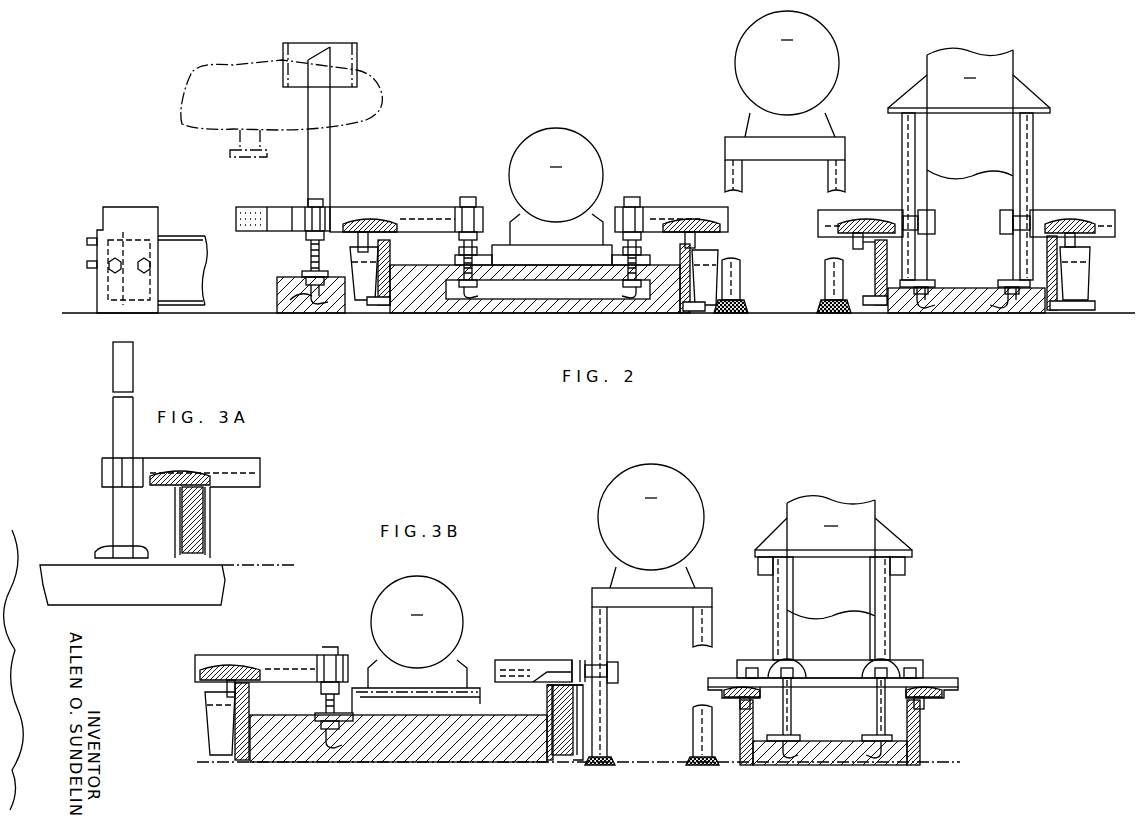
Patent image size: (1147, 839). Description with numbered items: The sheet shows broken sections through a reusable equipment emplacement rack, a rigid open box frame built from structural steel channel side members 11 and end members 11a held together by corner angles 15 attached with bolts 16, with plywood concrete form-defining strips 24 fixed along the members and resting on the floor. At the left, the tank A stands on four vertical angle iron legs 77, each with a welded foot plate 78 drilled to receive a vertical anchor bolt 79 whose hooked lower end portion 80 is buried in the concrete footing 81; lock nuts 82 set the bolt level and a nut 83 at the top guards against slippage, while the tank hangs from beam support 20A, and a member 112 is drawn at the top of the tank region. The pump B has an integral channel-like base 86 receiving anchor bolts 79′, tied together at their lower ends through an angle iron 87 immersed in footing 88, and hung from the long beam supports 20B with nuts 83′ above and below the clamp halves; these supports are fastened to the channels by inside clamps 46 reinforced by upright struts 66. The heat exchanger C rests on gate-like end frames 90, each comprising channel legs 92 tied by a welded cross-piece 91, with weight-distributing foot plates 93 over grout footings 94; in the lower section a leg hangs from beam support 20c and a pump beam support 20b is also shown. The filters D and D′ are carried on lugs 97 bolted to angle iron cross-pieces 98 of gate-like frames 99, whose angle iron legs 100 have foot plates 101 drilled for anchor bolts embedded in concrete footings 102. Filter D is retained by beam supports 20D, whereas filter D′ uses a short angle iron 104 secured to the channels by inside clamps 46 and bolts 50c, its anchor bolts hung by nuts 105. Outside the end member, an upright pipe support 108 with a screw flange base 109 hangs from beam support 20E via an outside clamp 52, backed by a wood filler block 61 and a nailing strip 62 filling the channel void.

In FIG. 2, the tank A is at (184, 111).
In FIG. 2, the pump B is at (556, 186).
In FIG. 3B, the pump B is at (417, 632).
In FIG. 2, the heat exchanger C is at (787, 63).
In FIG. 3B, the heat exchanger C is at (651, 526).
In FIG. 2, the filter D is at (970, 113).
In FIG. 3B, the filter D′ is at (831, 557).
In FIG. 2, the side member 11 is at (184, 272).
In FIG. 3A, the end member 11a is at (205, 523).
In FIG. 2, the corner angle 15 is at (96, 246).
In FIG. 2, the bolt 16 is at (142, 268).
In FIG. 2, the beam support 20A is at (260, 203).
In FIG. 2, the beam support 20B is at (397, 191).
In FIG. 2, the beam support 20D is at (895, 179).
In FIG. 3A, the beam support 20E is at (253, 476).
In FIG. 3B, the beam support 20b is at (333, 628).
In FIG. 3B, the beam support 20c is at (538, 643).
In FIG. 2, the concrete form-defining strip 24 is at (391, 265).
In FIG. 3A, the concrete form-defining strip 24 is at (205, 555).
In FIG. 3B, the concrete form-defining strip 24 is at (250, 757).
In FIG. 2, the inside clamp 46 is at (360, 253).
In FIG. 3B, the inside clamp 46 is at (703, 677).
In FIG. 3B, the bolt 50c is at (750, 667).
In FIG. 3A, the outside clamp 52 is at (200, 478).
In FIG. 3B, the outside clamp 52 is at (587, 716).
In FIG. 3B, the wood filler block 61 is at (565, 758).
In FIG. 3B, the nailing strip 62 is at (581, 762).
In FIG. 2, the upright strut 66 is at (372, 292).
In FIG. 3B, the upright strut 66 is at (210, 718).
In FIG. 2, the angle iron leg 77 is at (322, 152).
In FIG. 2, the foot plate 78 is at (302, 273).
In FIG. 2, the anchor bolt 79 is at (310, 250).
In FIG. 2, the anchor bolt 79′ is at (476, 250).
In FIG. 2, the hooked lower end portion 80 is at (283, 309).
In FIG. 2, the concrete footing 81 is at (290, 300).
In FIG. 2, the lock nut 82 is at (326, 306).
In FIG. 2, the nut 83 is at (312, 206).
In FIG. 2, the nut 83′ is at (476, 212).
In FIG. 2, the channel-like base 86 is at (500, 258).
In FIG. 2, the angle iron 87 is at (585, 292).
In FIG. 2, the footing 88 is at (540, 312).
In FIG. 2, the end frame 90 is at (838, 128).
In FIG. 2, the cross-piece 91 is at (762, 152).
In FIG. 2, the channel leg 92 is at (723, 180).
In FIG. 2, the foot plate 93 is at (824, 304).
In FIG. 2, the grout footing 94 is at (736, 315).
In FIG. 3B, the lug 97 is at (776, 540).
In FIG. 2, the angle iron cross-piece 98 is at (902, 116).
In FIG. 3B, the angle iron cross-piece 98 is at (768, 570).
In FIG. 3B, the gate-like frame 99 is at (772, 598).
In FIG. 2, the angle iron leg 100 is at (1012, 198).
In FIG. 3B, the angle iron leg 100 is at (786, 622).
In FIG. 2, the foot plate 101 is at (906, 293).
In FIG. 3B, the foot plate 101 is at (862, 736).
In FIG. 2, the concrete footing 102 is at (961, 290).
In FIG. 3B, the concrete footing 102 is at (834, 762).
In FIG. 3B, the angle iron 104 is at (839, 668).
In FIG. 3B, the nut 105 is at (790, 665).
In FIG. 3A, the pipe support 108 is at (114, 417).
In FIG. 3A, the screw flange base 109 is at (102, 560).
In FIG. 2, the stanchion 112 is at (350, 72).